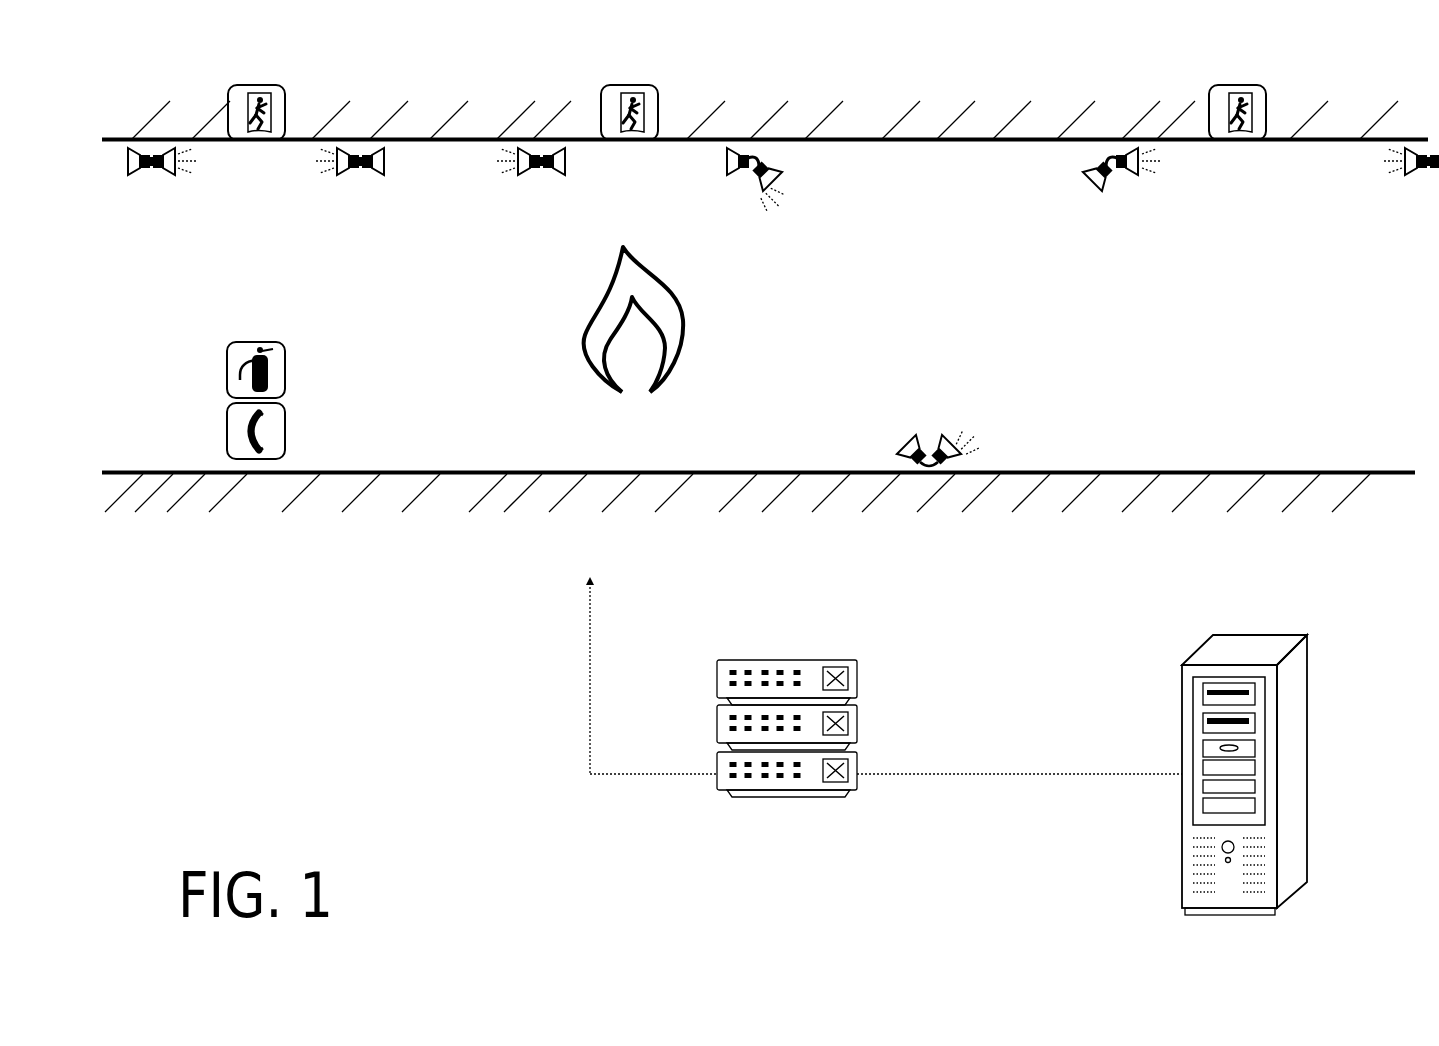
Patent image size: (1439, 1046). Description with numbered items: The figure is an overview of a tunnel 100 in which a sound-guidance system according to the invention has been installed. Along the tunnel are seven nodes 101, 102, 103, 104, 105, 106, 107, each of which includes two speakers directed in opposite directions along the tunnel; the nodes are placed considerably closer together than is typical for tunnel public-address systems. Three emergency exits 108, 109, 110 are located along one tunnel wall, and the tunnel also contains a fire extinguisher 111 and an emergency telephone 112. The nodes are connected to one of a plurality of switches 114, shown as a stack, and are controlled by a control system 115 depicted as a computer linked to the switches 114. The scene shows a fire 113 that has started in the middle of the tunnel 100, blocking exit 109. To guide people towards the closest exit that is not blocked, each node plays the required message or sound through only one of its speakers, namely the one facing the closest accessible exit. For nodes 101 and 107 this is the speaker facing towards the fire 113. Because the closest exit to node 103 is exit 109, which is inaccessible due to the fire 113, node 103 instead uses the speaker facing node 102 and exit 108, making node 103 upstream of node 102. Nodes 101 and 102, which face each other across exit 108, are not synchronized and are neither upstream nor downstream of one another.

The tunnel 100 is at (1305, 386).
The node 101 is at (138, 183).
The node 102 is at (348, 180).
The node 103 is at (526, 180).
The node 104 is at (745, 181).
The node 105 is at (932, 437).
The node 106 is at (1122, 180).
The node 107 is at (1408, 180).
The emergency exit 108 is at (251, 100).
The emergency exit 109 is at (622, 100).
The emergency exit 110 is at (1229, 100).
The fire extinguisher 111 is at (236, 360).
The emergency telephone 112 is at (279, 432).
The fire 113 is at (624, 319).
The switch 114 is at (884, 705).
The control system 115 is at (1244, 790).